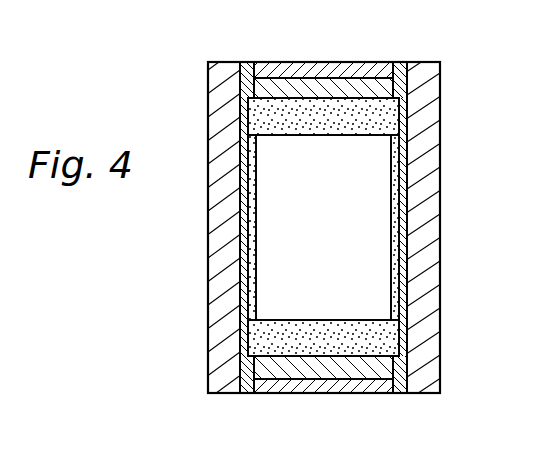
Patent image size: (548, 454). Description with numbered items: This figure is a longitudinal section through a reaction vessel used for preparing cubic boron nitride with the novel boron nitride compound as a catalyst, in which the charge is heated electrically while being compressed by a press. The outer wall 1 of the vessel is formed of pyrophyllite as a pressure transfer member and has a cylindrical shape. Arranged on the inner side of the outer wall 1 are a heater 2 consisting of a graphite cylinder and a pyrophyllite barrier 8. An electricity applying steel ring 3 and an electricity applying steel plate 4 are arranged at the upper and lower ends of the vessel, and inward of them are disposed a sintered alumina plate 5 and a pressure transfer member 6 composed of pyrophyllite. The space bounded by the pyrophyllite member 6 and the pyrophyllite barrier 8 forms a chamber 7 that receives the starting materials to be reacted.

The outer wall 1 is at (428, 181).
The heater 2 is at (400, 224).
The electricity applying steel ring 3 is at (399, 63).
The electricity applying steel plate 4 is at (352, 70).
The sintered alumina plate 5 is at (318, 84).
The pressure transfer member 6 is at (383, 119).
The chamber 7 is at (368, 273).
The pyrophyllite barrier 8 is at (394, 158).